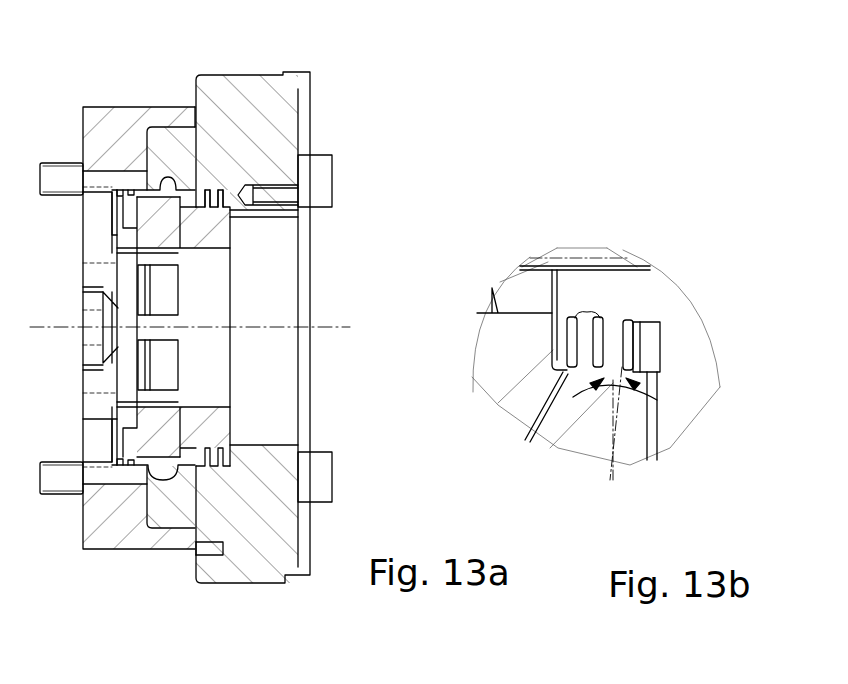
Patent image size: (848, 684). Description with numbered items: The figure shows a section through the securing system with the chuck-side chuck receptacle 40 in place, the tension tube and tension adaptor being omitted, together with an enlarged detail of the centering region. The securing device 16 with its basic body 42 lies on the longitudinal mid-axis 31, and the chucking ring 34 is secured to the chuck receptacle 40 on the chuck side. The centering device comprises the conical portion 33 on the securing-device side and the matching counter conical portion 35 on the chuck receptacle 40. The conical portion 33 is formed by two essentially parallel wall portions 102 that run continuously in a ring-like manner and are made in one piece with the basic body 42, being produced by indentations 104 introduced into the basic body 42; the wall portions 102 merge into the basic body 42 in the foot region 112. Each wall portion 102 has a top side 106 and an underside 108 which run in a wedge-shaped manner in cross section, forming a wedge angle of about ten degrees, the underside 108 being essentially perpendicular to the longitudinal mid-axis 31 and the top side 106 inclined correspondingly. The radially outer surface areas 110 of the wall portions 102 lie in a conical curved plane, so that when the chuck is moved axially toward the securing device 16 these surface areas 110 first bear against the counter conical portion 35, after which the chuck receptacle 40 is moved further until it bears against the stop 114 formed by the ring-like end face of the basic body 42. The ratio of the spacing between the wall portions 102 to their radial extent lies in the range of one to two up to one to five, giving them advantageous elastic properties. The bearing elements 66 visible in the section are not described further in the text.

In FIG. 13A, the securing device 16 is at (107, 565).
In FIG. 13A, the longitudinal mid-axis 31 is at (323, 323).
In FIG. 13A, the conical portion 33 is at (207, 218).
In FIG. 13B, the conical portion 33 is at (660, 345).
In FIG. 13A, the chucking ring 34 is at (160, 148).
In FIG. 13A, the counter conical portion 35 is at (213, 188).
In FIG. 13B, the counter conical portion 35 is at (627, 312).
In FIG. 13A, the chuck receptacle 40 is at (270, 113).
In FIG. 13B, the chuck receptacle 40 is at (667, 307).
In FIG. 13B, the basic body 42 is at (585, 442).
In FIG. 13A, the bearing 66 is at (165, 232).
In FIG. 13B, the wall portions 102 is at (607, 312).
In FIG. 13B, the indentations 104 is at (530, 422).
In FIG. 13B, the top side 106 is at (670, 357).
In FIG. 13B, the underside 108 is at (625, 318).
In FIG. 13B, the radially outer surface areas 110 is at (563, 320).
In FIG. 13B, the foot region 112 is at (605, 352).
In FIG. 13A, the stop 114 is at (193, 118).